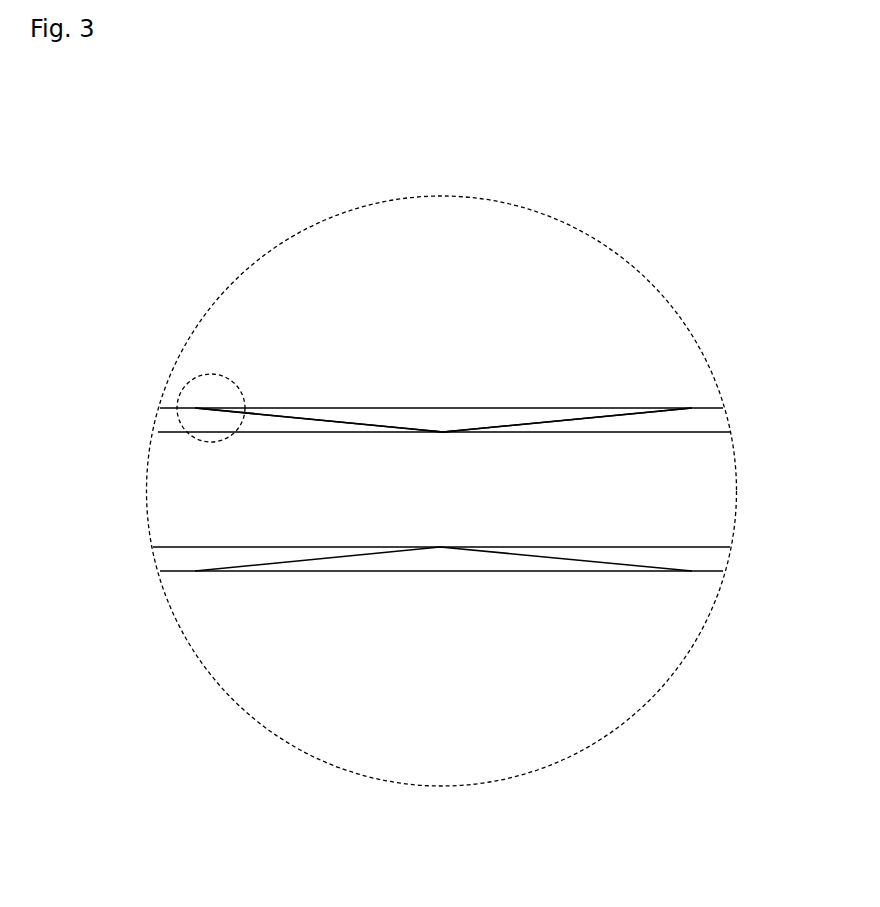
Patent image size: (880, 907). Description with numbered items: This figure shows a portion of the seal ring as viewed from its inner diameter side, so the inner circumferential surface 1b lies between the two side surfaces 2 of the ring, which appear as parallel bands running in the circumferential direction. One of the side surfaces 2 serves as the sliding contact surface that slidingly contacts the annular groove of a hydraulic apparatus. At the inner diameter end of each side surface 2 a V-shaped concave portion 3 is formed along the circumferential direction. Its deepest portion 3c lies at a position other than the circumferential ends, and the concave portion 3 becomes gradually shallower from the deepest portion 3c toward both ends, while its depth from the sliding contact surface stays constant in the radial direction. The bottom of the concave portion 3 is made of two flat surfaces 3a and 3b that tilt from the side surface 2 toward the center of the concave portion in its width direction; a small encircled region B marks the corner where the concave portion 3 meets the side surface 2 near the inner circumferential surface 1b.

The inner circumferential surface 1b is at (170, 493).
The side surface 2 is at (707, 407).
The V-shaped concave portion 3 is at (470, 418).
The flat surface 3a is at (347, 423).
The flat surface 3b is at (565, 418).
The deepest portion 3c is at (443, 428).
The enlarged region B is at (208, 373).